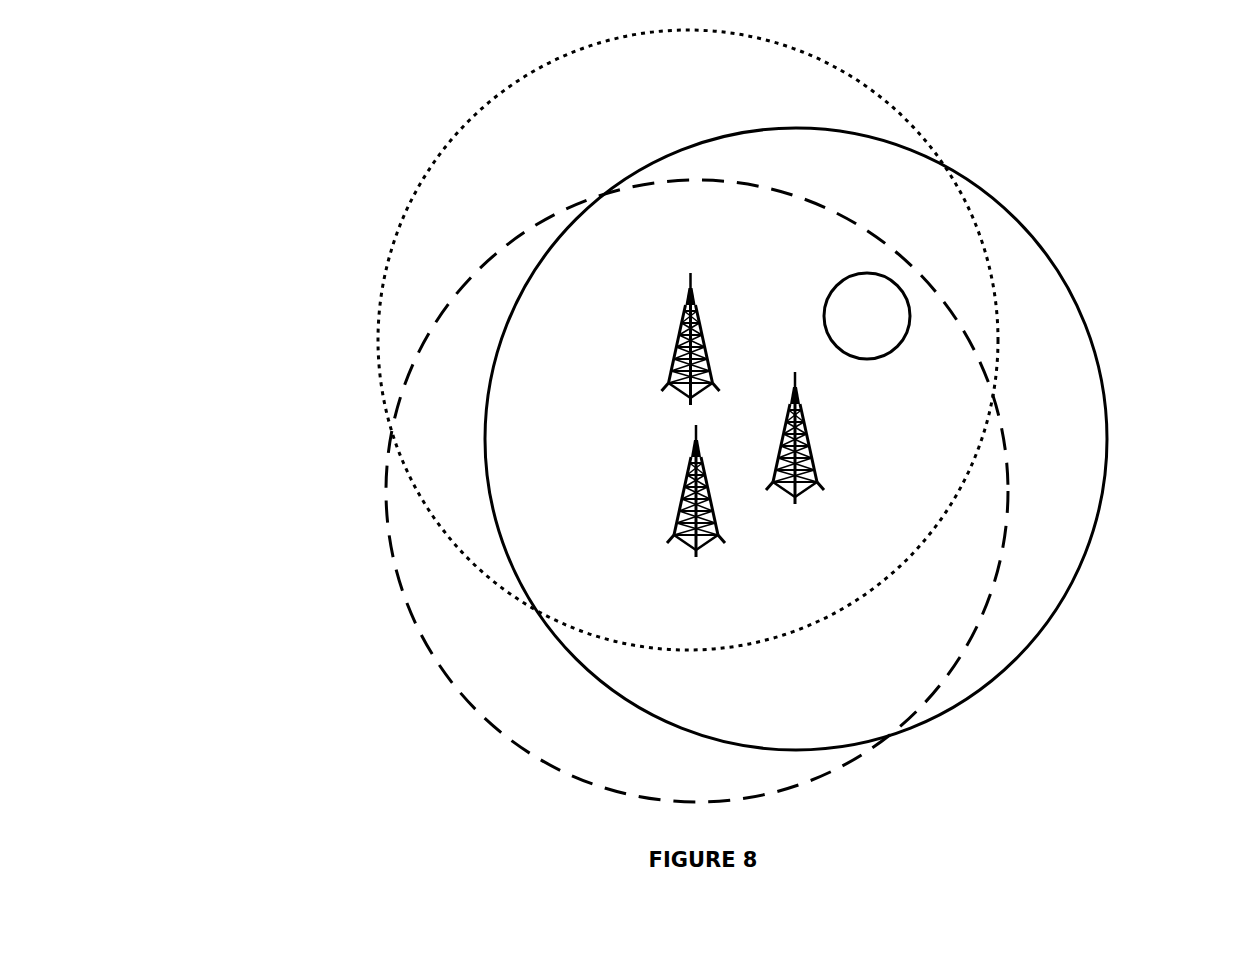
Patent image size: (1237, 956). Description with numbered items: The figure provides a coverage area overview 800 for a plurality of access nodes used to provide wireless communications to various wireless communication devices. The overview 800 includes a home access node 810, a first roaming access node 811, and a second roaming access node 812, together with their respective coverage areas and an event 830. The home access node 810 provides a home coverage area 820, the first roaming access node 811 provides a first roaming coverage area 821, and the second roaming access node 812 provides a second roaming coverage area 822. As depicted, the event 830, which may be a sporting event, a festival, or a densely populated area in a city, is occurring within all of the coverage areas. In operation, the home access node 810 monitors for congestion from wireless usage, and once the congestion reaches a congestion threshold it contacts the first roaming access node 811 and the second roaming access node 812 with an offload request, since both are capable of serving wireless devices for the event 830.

The coverage area overview 800 is at (244, 90).
The home access node 810 is at (688, 286).
The first roaming access node 811 is at (691, 463).
The second roaming access node 812 is at (803, 412).
The home coverage area 820 is at (415, 197).
The first roaming coverage area 821 is at (390, 546).
The second roaming coverage area 822 is at (1098, 368).
The event 830 is at (867, 316).